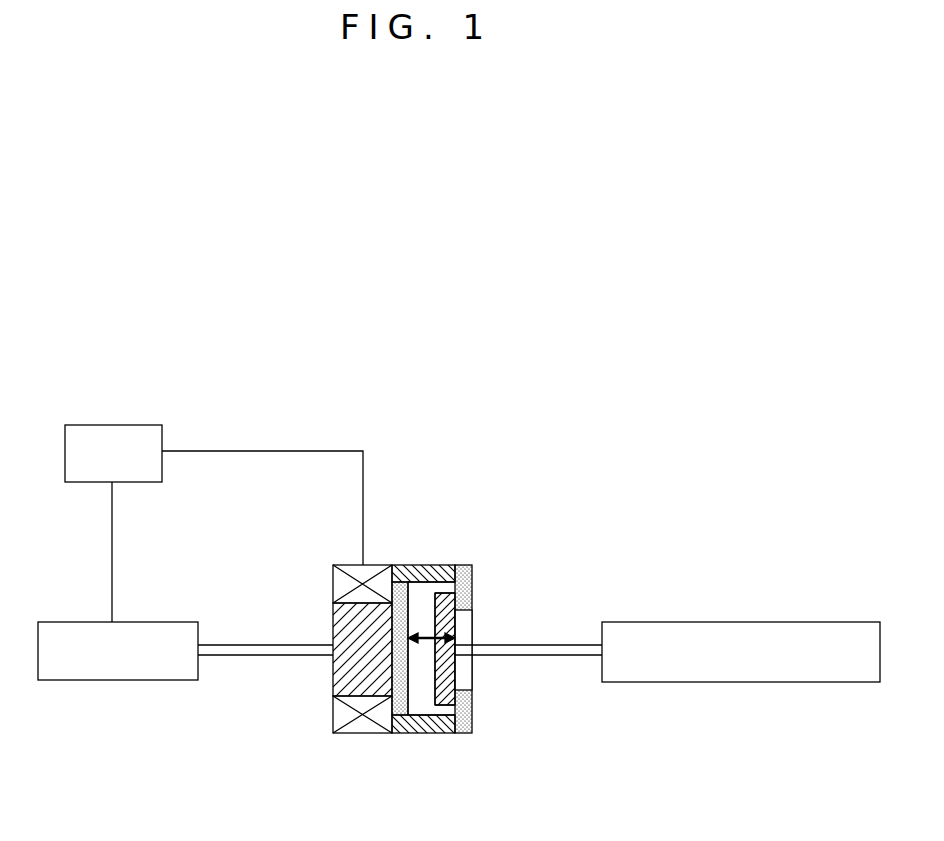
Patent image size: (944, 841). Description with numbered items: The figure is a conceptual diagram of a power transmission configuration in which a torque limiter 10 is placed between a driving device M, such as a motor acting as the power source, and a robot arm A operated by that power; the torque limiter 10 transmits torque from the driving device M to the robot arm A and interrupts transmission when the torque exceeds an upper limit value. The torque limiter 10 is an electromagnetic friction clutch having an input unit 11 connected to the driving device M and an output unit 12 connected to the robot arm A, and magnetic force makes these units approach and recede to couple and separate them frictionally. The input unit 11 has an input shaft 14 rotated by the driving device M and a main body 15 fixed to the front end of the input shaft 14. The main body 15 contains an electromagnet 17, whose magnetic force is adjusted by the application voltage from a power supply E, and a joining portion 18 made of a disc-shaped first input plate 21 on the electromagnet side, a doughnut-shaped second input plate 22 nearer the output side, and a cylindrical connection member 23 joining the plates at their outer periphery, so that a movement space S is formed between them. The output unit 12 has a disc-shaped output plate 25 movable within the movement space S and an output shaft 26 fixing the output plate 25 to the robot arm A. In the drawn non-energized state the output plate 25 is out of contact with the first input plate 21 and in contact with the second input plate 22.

The power supply E is at (150, 425).
The driving device M is at (163, 622).
The robot arm A is at (715, 622).
The torque limiter 10 is at (489, 450).
The input unit 11 is at (319, 673).
The output unit 12 is at (556, 610).
The input shaft 14 is at (246, 656).
The main body 15 is at (330, 702).
The electromagnet 17 is at (362, 734).
The joining portion 18 is at (462, 633).
The first input plate 21 is at (401, 565).
The second input plate 22 is at (462, 565).
The connection member 23 is at (431, 565).
The output plate 25 is at (472, 623).
The output shaft 26 is at (570, 656).
The movement space S is at (418, 706).